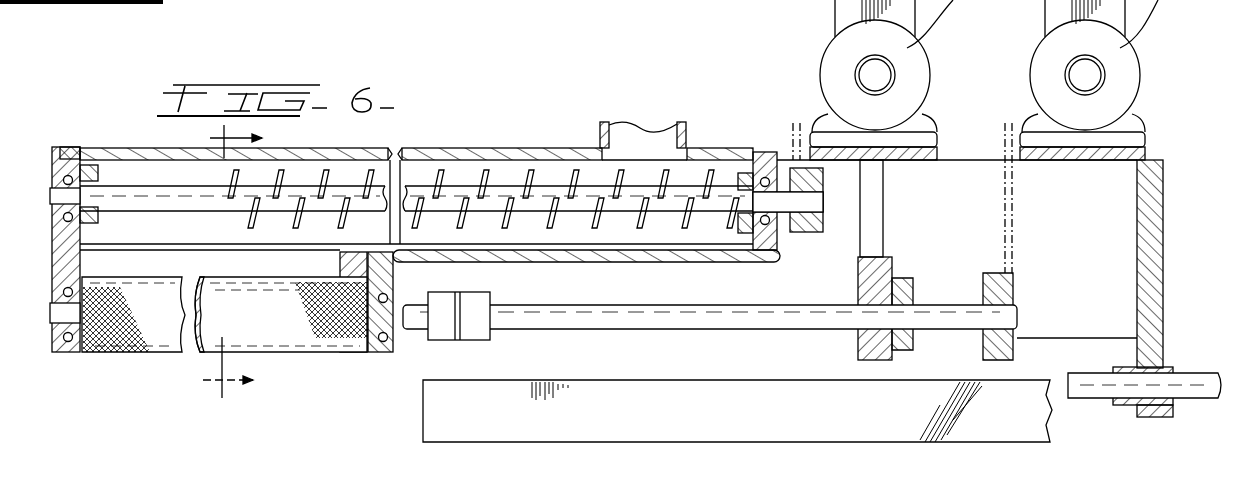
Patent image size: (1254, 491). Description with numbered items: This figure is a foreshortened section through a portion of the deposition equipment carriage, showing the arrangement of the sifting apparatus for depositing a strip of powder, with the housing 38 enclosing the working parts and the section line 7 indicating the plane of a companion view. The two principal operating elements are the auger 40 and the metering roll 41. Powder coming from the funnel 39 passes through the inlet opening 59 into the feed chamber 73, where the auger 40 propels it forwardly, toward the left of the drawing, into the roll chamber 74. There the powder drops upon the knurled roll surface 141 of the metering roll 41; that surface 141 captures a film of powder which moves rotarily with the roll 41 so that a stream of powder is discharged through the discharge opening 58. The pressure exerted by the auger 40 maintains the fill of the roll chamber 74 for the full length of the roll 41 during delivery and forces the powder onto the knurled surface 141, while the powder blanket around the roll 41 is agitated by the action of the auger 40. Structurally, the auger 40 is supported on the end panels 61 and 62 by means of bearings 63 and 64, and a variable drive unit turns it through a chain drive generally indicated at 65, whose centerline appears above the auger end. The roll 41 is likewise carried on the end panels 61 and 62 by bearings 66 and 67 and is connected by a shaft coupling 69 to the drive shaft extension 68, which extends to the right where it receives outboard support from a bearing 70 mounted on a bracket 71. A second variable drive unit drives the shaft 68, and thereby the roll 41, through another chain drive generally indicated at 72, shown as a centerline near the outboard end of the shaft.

The section line 7- 7 is at (229, 140).
The housing 38 is at (147, 152).
The funnel 39 is at (600, 139).
The auger 40 is at (384, 172).
The metering roll 41 is at (146, 357).
The discharge opening 58 is at (327, 390).
The inlet opening 59 is at (647, 160).
The end panel 61 is at (70, 147).
The end panel 62 is at (765, 166).
The bearing 63 is at (60, 186).
The bearing 64 is at (773, 218).
The chain drive 65 is at (785, 127).
The bearing 66 is at (62, 297).
The bearing 67 is at (395, 345).
The drive shaft extension 68 is at (625, 318).
The shaft coupling 69 is at (475, 312).
The bearing 70 is at (903, 297).
The bracket 71 is at (868, 278).
The chain drive 72 is at (1018, 210).
The feed chamber 73 is at (341, 172).
The roll chamber 74 is at (312, 273).
The knurled roll surface 141 is at (157, 297).